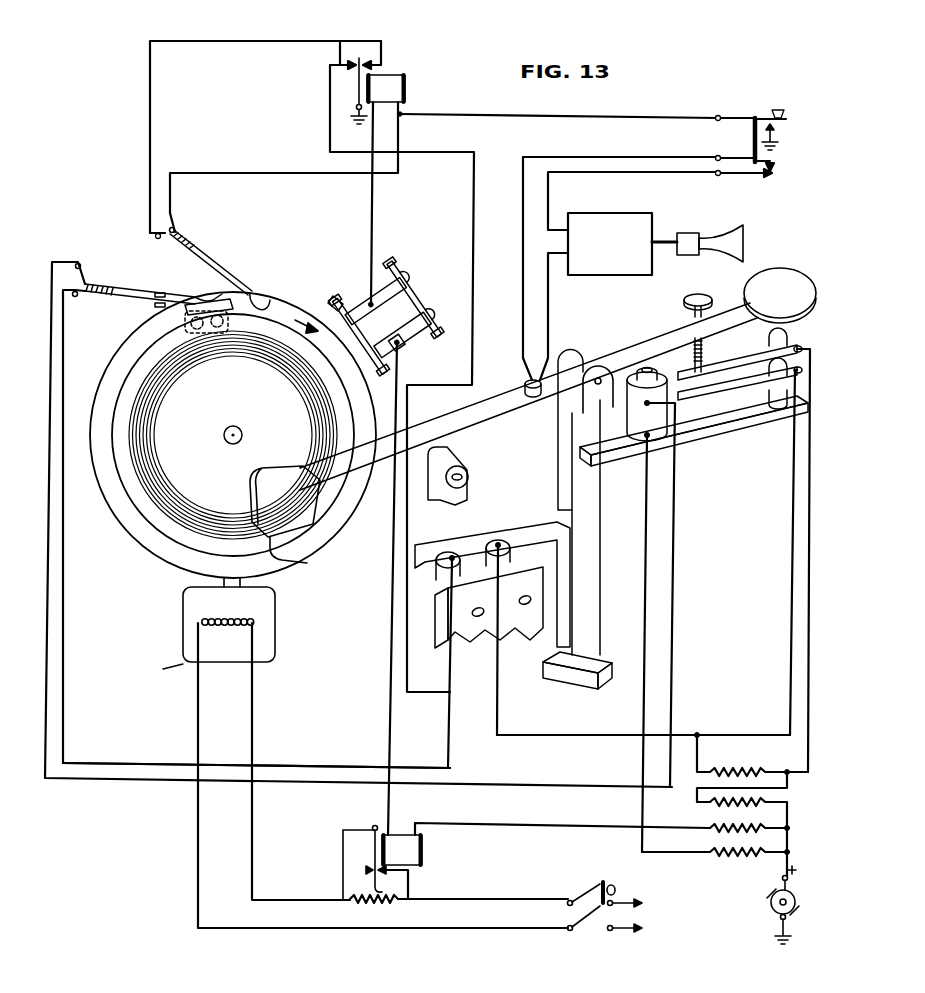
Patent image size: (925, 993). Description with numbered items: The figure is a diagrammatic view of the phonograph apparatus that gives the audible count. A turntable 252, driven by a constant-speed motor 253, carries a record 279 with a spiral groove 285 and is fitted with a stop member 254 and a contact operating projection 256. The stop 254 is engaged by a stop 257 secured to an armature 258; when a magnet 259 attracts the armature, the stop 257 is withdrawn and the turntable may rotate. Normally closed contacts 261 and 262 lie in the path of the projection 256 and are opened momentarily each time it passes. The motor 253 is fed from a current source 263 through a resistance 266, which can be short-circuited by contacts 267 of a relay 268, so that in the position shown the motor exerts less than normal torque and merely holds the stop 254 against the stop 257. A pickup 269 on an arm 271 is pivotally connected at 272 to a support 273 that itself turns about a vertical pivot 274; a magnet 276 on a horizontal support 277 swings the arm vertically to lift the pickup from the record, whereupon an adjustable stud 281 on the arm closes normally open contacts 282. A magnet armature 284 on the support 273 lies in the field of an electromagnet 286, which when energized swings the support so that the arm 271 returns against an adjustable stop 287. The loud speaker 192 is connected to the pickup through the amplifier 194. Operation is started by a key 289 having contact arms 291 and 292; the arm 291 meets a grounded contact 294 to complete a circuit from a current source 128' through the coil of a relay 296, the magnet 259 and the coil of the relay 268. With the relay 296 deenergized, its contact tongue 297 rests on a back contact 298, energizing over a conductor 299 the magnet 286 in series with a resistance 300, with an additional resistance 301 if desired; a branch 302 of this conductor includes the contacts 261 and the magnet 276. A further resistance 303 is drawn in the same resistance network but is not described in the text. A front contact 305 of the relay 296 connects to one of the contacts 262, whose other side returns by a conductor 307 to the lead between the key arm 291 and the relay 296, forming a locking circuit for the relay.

The current source 128' is at (758, 905).
The loud speaker 192 is at (714, 240).
The amplifier 194 is at (614, 207).
The turntable 252 is at (160, 548).
The motor 253 is at (278, 644).
The stop member 254 is at (340, 318).
The contact operating projection 256 is at (185, 312).
The stop 257 is at (389, 366).
The armature 258 is at (353, 304).
The magnet 259 is at (413, 330).
The normally closed contacts 261 is at (157, 283).
The normally closed contacts 262 is at (198, 251).
The source of current 263 is at (628, 921).
The resistance 266 is at (380, 905).
The relay contacts 267 is at (408, 882).
The relay 268 is at (410, 855).
The pickup 269 is at (284, 484).
The arm 271 is at (519, 400).
The pivot 272 is at (599, 378).
The support 273 is at (582, 505).
The pivot 274 is at (592, 681).
The magnet 276 is at (668, 425).
The horizontal support 277 is at (760, 412).
The record 279 is at (233, 435).
The adjustable contact operating stud 281 is at (699, 298).
The normally open contacts 282 is at (724, 372).
The magnet armature 284 is at (510, 540).
The spiral groove 285 is at (300, 563).
The electromagnet 286 is at (440, 588).
The adjustable stop 287 is at (470, 477).
The key 289 is at (780, 112).
The contact arm 291 is at (735, 118).
The contact arm 292 is at (748, 158).
The grounded contact 294 is at (778, 140).
The relay 296 is at (395, 89).
The contact tongue 297 is at (357, 79).
The back contact 298 is at (340, 50).
The conductor 299 is at (473, 212).
The resistance 300 is at (735, 771).
The additional resistance 301 is at (725, 803).
The branch conductor 302 is at (341, 765).
The resistor 303 is at (716, 858).
The front contact 305 is at (381, 50).
The conductor 307 is at (340, 174).